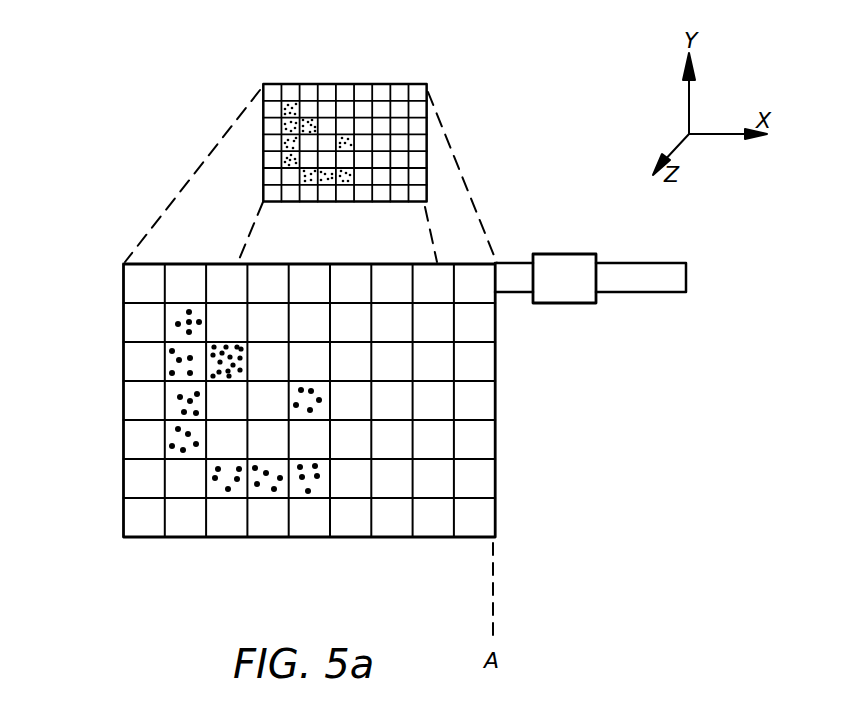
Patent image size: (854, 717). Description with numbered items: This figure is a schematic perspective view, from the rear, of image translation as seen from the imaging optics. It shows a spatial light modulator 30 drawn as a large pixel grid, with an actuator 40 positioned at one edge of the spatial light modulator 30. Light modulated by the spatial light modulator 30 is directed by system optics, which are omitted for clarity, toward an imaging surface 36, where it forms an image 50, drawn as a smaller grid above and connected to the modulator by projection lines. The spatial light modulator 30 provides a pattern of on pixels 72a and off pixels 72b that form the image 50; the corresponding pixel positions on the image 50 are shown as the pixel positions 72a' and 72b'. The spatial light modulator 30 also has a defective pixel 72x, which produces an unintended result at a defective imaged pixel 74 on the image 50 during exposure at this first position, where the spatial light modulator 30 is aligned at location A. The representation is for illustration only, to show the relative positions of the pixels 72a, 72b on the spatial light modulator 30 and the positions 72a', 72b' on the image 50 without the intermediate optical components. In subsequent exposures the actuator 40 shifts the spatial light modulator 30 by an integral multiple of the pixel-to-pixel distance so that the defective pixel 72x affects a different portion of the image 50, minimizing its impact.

The spatial light modulator 30 is at (149, 537).
The imaging surface 36 is at (311, 84).
The actuator 40 is at (570, 303).
The image 50 is at (445, 131).
The defective imaged pixel 74 is at (281, 106).
The defective pixel 72x is at (210, 350).
The on pixels 72a is at (252, 533).
The off pixels 72b is at (353, 524).
The on pixel positions on image 72a' is at (300, 212).
The off pixel positions on image 72b' is at (379, 212).